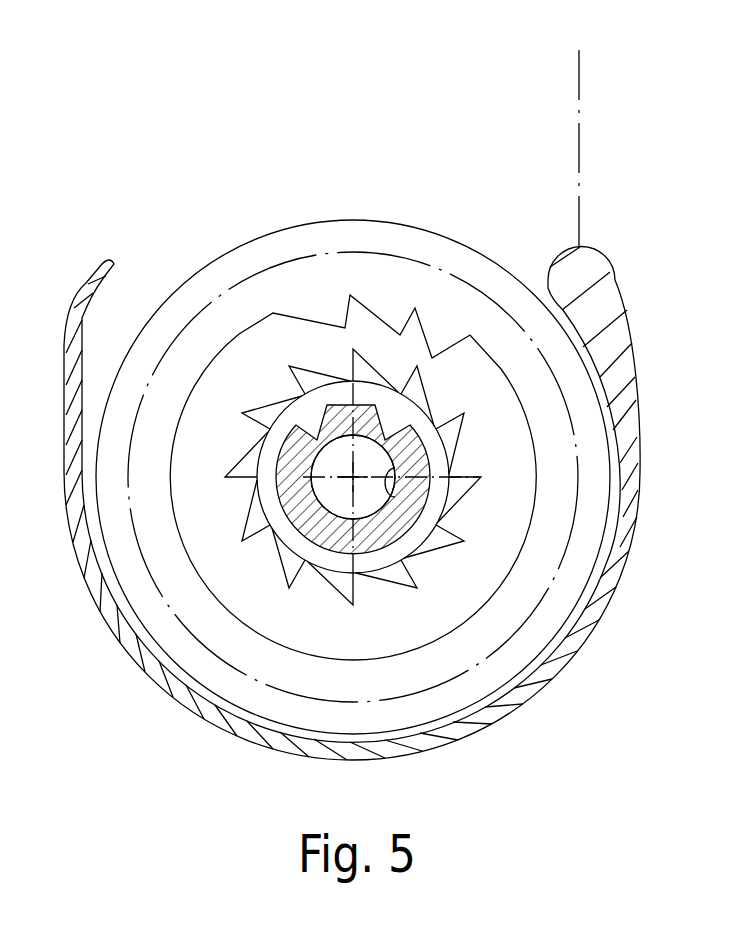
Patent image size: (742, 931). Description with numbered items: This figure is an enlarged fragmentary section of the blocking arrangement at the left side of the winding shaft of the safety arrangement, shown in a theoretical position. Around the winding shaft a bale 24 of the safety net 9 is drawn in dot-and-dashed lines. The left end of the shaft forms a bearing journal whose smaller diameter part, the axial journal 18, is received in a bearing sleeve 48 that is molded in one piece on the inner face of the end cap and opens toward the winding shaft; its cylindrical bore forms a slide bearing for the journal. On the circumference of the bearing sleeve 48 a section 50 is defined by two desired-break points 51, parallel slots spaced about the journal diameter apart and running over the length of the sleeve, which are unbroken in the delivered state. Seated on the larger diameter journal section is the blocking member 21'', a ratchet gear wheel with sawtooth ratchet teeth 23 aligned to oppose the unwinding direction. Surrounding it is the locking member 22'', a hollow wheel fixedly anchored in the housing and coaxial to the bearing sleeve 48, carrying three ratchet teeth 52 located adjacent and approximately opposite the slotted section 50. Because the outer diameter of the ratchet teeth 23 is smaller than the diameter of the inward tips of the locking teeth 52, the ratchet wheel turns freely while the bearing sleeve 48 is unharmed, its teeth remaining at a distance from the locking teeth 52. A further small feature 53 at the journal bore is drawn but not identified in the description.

The safety net 9 is at (579, 78).
The axial journal 18 is at (391, 478).
The blocking member 21'' is at (247, 696).
The locking member 22'' is at (352, 503).
The ratchet teeth 23 is at (402, 573).
The bale 24 is at (278, 266).
The bearing sleeve 48 is at (270, 530).
The section 50 is at (340, 422).
The desired-break points 51 is at (313, 420).
The ratchet teeth 52 is at (388, 320).
The groove 53 is at (397, 474).